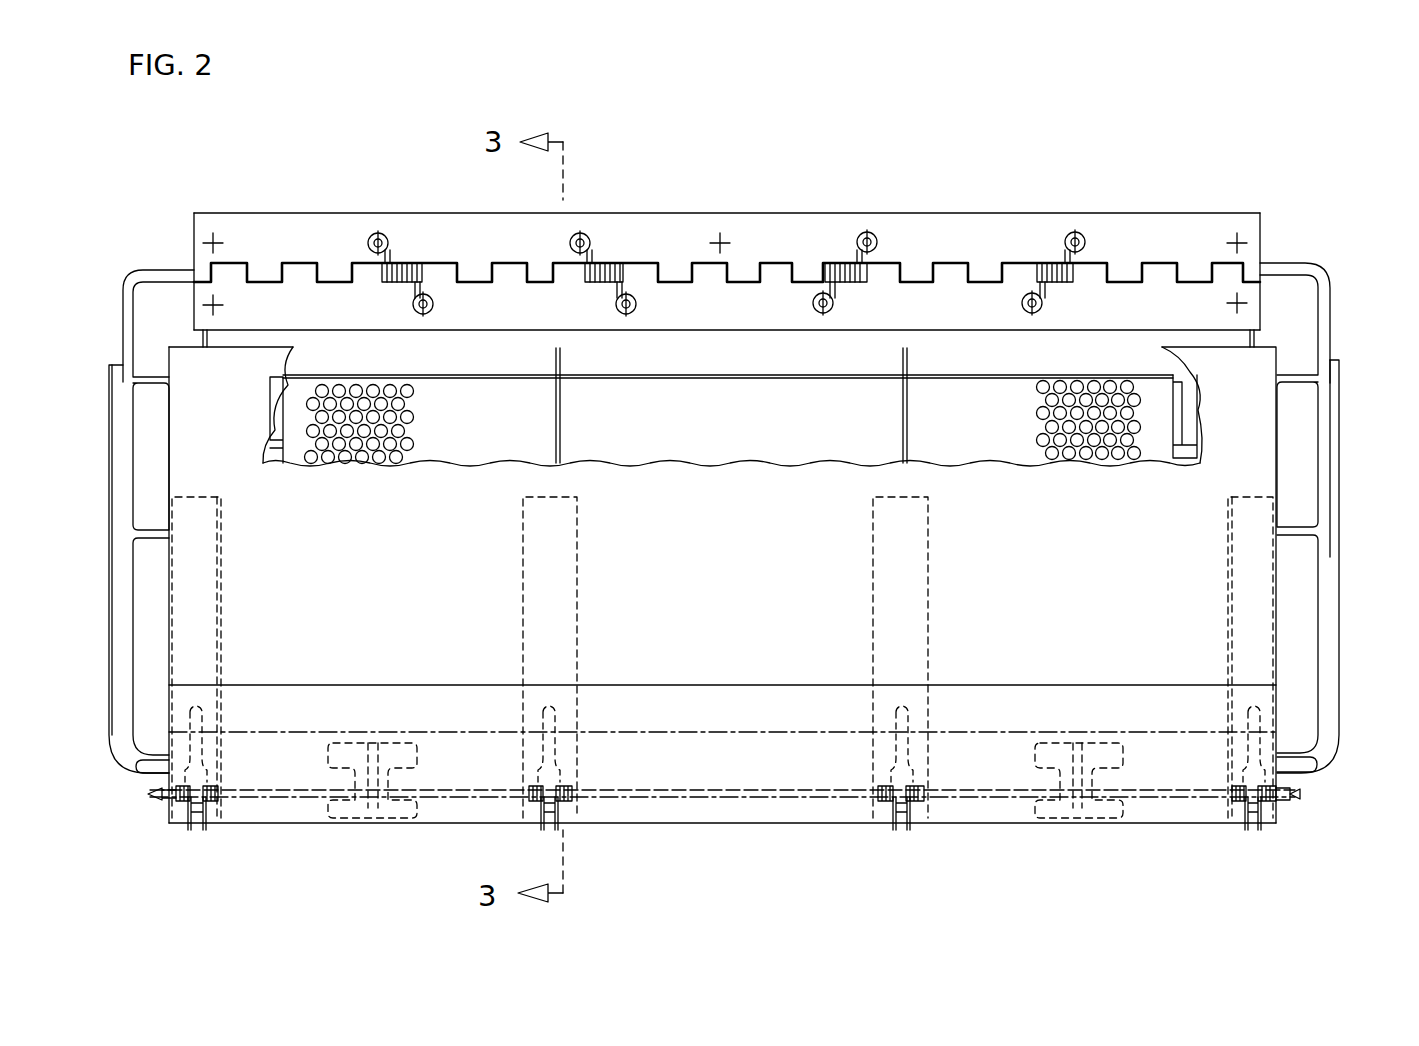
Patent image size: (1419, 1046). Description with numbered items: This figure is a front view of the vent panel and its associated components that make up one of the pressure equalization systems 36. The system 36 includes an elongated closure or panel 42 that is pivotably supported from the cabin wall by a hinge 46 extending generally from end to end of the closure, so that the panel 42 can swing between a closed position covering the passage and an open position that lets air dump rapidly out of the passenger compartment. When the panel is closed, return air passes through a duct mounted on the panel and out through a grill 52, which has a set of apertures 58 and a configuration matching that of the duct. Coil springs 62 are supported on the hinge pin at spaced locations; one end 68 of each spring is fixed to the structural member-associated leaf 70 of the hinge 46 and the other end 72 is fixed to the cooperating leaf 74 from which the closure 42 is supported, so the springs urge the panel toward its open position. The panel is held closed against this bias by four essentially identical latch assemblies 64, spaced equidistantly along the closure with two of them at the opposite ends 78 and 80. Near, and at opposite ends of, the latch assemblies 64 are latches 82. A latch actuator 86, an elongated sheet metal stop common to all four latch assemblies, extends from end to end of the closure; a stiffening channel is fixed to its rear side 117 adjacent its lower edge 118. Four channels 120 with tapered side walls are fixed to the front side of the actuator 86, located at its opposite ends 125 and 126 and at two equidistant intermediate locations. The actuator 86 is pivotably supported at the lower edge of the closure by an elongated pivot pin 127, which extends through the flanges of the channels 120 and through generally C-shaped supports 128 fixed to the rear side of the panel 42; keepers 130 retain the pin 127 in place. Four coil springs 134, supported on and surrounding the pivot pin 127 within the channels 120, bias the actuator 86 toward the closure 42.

The pressure equalization system 36 is at (738, 163).
The closure or panel 42 is at (102, 434).
The hinge 46 is at (185, 249).
The grill 52 is at (1186, 411).
The apertures 58 is at (412, 391).
The coil springs 62 is at (1046, 260).
The latch assemblies 64 is at (213, 738).
The spring end 68 is at (857, 250).
The structural member-associated leaf 70 is at (1012, 213).
The spring end 72 is at (1044, 292).
The cooperating leaf 74 is at (975, 331).
The closure end 78 is at (110, 540).
The closure end 80 is at (1330, 500).
The latches 82 is at (410, 774).
The latch actuator 86 is at (729, 463).
The rear side of actuator 117 is at (713, 537).
The lower edge of actuator 118 is at (735, 823).
The channels 120 is at (225, 560).
The actuator end 125 is at (169, 625).
The actuator end 126 is at (1277, 587).
The pivot pin 127 is at (1300, 792).
The C-shaped supports 128 is at (197, 340).
The keepers 130 is at (160, 796).
The coil springs 134 is at (208, 800).